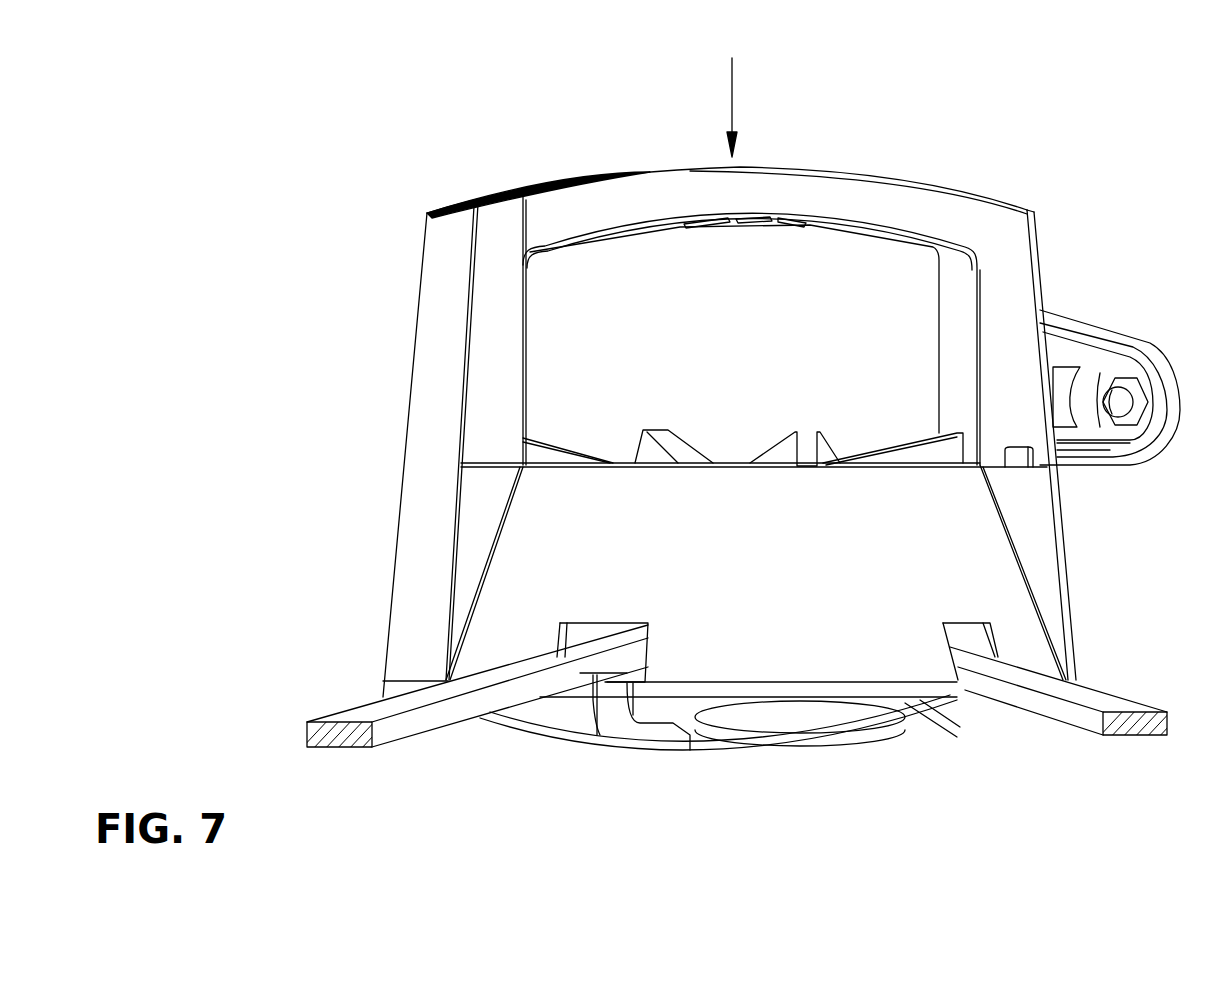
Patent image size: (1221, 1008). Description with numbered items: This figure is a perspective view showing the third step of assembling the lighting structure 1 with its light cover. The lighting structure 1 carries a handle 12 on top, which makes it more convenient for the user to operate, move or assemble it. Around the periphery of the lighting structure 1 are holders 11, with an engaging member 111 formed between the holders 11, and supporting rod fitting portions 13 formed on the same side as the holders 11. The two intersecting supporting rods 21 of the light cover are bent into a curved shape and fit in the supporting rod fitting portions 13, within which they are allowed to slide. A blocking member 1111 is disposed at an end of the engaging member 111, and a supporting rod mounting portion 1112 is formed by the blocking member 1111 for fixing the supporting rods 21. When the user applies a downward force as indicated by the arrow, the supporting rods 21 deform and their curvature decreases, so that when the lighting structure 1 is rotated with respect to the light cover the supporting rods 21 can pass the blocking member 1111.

The lighting structure 1 is at (523, 163).
The holder 11 is at (867, 700).
The engaging member 111 is at (673, 687).
The blocking member 1111 is at (602, 735).
The supporting rod mounting portion 1112 is at (658, 745).
The handle 12 is at (912, 180).
The supporting rod fitting portion 13 is at (603, 622).
The supporting rod 21 is at (414, 722).